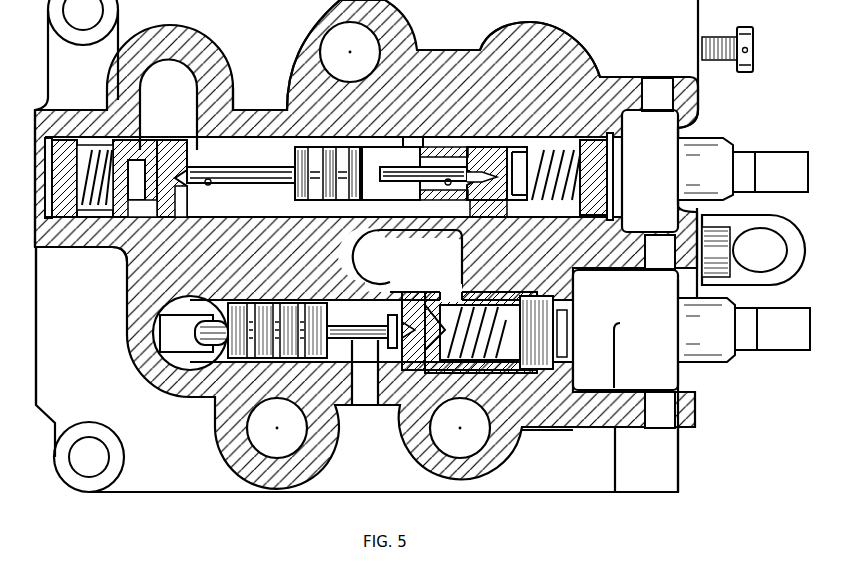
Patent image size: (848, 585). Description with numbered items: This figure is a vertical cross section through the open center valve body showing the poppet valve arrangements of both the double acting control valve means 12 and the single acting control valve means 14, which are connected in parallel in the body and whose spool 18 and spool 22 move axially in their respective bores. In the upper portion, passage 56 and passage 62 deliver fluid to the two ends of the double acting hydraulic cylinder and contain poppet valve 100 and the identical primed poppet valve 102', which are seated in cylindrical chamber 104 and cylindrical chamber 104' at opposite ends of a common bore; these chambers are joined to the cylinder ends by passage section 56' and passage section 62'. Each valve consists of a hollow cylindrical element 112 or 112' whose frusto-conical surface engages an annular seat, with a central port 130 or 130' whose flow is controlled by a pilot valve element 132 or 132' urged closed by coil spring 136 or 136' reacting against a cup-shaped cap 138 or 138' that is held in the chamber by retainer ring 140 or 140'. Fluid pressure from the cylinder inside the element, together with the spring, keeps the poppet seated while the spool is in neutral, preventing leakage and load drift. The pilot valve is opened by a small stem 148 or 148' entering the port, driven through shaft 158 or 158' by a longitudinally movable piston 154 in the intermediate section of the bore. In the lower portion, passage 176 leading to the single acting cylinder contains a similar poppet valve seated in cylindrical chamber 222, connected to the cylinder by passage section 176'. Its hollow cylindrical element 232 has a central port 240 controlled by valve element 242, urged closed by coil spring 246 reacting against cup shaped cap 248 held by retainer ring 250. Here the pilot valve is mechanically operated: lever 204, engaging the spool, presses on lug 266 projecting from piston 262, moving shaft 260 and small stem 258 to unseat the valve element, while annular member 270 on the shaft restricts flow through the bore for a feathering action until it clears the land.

The double acting control valve means 12 is at (697, 128).
The single acting control valve means 14 is at (696, 378).
The spool 18 is at (691, 179).
The spool 22 is at (695, 337).
The passage 56 is at (415, 153).
The passage section 56' is at (553, 49).
The passage 62 is at (286, 70).
The passage section 62' is at (199, 98).
The poppet valve 100 is at (545, 113).
The poppet valve 102' is at (81, 262).
The cylindrical chamber 104 is at (649, 171).
The cylindrical chamber 104' is at (54, 305).
The hollow cylindrical element 112 is at (484, 146).
The hollow cylindrical element 112' is at (175, 165).
The port 130 is at (488, 221).
The port 130' is at (147, 225).
The valve element 132 is at (527, 196).
The valve element 132' is at (152, 145).
The coil spring 136 is at (560, 197).
The coil spring 136' is at (127, 164).
The cup-shaped cap 138 is at (621, 177).
The cup-shaped cap 138' is at (76, 152).
The retainer ring 140 is at (637, 176).
The retainer ring 140' is at (66, 140).
The small stem 148 is at (493, 145).
The small stem 148' is at (197, 218).
The piston 154 is at (334, 147).
The shaft 158 is at (419, 147).
The shaft 158' is at (242, 150).
The passage 176 is at (367, 386).
The passage section 176' is at (407, 261).
The lever 204 is at (152, 345).
The cylindrical chamber 222 is at (553, 402).
The hollow cylindrical element 232 is at (445, 290).
The port 240 is at (437, 374).
The valve element 242 is at (478, 292).
The coil spring 246 is at (466, 371).
The cup shaped cap 248 is at (578, 318).
The retainer ring 250 is at (580, 292).
The small stem 258 is at (418, 300).
The shaft 260 is at (348, 326).
The piston 262 is at (283, 358).
The lug 266 is at (213, 330).
The annular member 270 is at (368, 380).